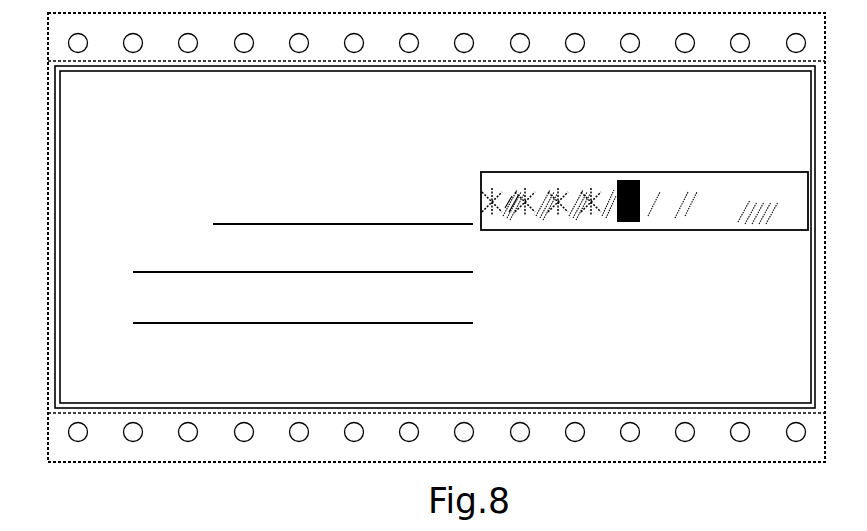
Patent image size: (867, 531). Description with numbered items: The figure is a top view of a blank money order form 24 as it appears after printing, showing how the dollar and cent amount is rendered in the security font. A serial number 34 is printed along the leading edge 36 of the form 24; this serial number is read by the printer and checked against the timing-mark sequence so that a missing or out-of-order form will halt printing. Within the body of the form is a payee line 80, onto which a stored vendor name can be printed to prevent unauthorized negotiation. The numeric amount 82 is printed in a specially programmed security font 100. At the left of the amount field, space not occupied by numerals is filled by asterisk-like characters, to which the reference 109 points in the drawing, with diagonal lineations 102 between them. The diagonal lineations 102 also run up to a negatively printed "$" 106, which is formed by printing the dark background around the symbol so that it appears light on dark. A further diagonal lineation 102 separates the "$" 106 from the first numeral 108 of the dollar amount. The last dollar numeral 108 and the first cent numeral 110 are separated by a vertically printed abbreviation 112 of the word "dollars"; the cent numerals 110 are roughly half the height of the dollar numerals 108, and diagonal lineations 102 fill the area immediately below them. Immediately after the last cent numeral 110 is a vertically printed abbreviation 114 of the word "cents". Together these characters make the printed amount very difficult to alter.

The money order form 24 is at (215, 375).
The serial number 34 is at (90, 160).
The leading edge 36 is at (48, 437).
The payee line 80 is at (227, 222).
The numeric amount 82 is at (758, 230).
The security font 100 is at (507, 184).
The diagonal lineations 102 is at (513, 186).
The negatively printed "$" 106 is at (614, 180).
The dollar amount numeral 108 is at (668, 180).
The asterisk fill characters 109 is at (490, 202).
The cent amount numeral 110 is at (742, 178).
The vertically printed abbreviation of "dollars" 112 is at (724, 177).
The vertically printed abbreviation of "cents" 114 is at (790, 178).